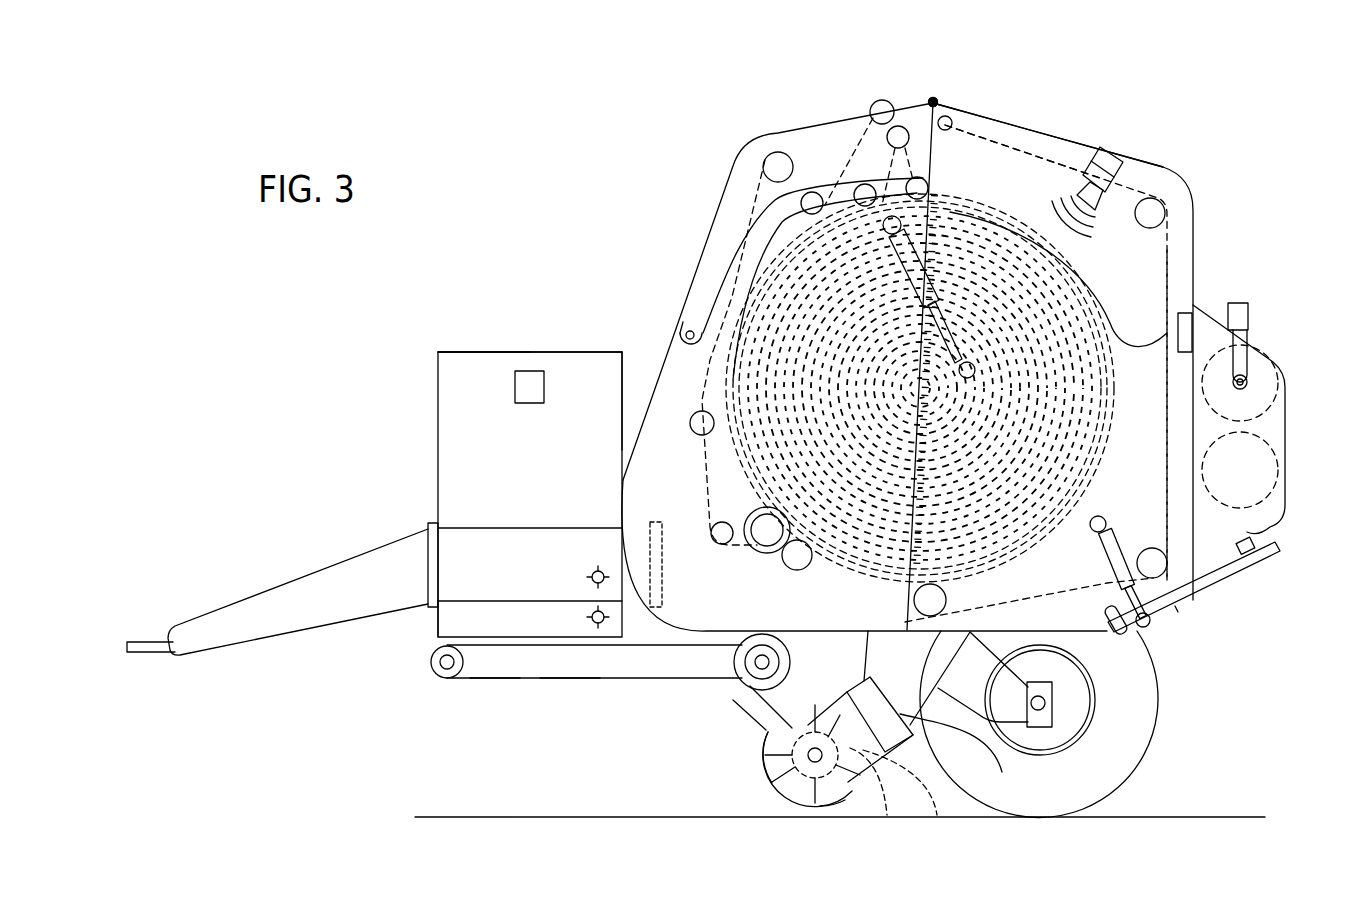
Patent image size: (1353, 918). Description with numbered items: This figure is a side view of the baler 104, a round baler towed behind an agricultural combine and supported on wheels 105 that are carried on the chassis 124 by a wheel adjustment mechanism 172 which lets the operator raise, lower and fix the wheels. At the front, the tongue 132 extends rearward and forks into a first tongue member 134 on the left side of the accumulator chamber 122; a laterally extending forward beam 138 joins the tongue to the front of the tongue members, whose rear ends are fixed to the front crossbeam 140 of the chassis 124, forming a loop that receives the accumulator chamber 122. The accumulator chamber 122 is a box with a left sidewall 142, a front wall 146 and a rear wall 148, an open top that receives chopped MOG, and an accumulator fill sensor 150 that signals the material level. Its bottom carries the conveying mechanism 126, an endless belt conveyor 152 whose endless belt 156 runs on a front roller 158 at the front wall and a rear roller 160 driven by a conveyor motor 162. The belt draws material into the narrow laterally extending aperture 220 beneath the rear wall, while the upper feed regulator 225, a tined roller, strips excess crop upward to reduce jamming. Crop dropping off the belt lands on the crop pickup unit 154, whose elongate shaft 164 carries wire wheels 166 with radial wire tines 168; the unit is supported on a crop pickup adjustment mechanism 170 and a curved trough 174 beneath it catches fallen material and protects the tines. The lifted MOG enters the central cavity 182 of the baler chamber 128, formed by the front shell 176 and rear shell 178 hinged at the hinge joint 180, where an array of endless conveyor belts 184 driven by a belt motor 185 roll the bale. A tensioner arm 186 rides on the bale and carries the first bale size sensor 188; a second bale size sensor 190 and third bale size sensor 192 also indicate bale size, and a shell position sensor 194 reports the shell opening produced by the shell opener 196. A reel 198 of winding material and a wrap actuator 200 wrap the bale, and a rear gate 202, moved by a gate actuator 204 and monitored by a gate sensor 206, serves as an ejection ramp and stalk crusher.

The baler 104 is at (624, 168).
The wheels 105 is at (1127, 757).
The accumulator chamber 122 is at (488, 352).
The chassis 124 is at (735, 702).
The conveying mechanism 126 is at (505, 695).
The baler chamber 128 is at (988, 101).
The tongue 132 is at (233, 638).
The first tongue member 134 is at (462, 590).
The laterally extending forward beam 138 is at (430, 520).
The front crossbeam 140 is at (640, 535).
The left sidewall 142 is at (462, 368).
The front wall 146 is at (438, 412).
The rear wall 148 is at (627, 372).
The accumulator fill sensor 150 is at (533, 373).
The endless belt conveyor 152 is at (558, 698).
The crop pickup unit 154 is at (775, 802).
The endless belt 156 is at (622, 700).
The front roller 158 is at (440, 673).
The rear roller 160 is at (737, 668).
The conveyor motor 162 is at (740, 712).
The elongate shaft 164 is at (835, 780).
The wire wheels 166 is at (881, 800).
The wire tines 168 is at (917, 805).
The crop pickup adjustment mechanism 170 is at (923, 713).
The wheel adjustment mechanism 172 is at (1052, 718).
The trough 174 is at (767, 777).
The front shell 176 is at (797, 140).
The rear shell 178 is at (1077, 147).
The hinge joint 180 is at (930, 102).
The central cavity 182 is at (997, 153).
The endless conveyor belts 184 is at (1167, 250).
The belt motor 185 is at (753, 556).
The arm 186 is at (758, 197).
The first bale size sensor 188 is at (690, 331).
The second bale size sensor 190 is at (1123, 163).
The third bale size sensor 192 is at (1177, 305).
The shell position sensor 194 is at (934, 100).
The shell opener 196 is at (974, 262).
The reel 198 is at (1277, 330).
The wrap actuator 200 is at (1240, 303).
The rear gate 202 is at (1178, 610).
The gate actuator 204 is at (1117, 540).
The gate sensor 206 is at (1270, 527).
The laterally extending aperture 220 is at (640, 635).
The upper feed regulator 225 is at (592, 617).